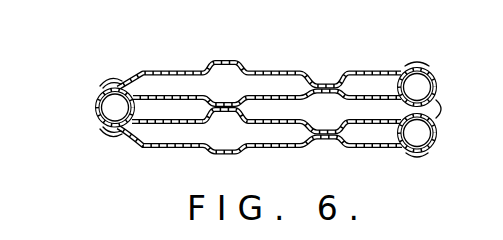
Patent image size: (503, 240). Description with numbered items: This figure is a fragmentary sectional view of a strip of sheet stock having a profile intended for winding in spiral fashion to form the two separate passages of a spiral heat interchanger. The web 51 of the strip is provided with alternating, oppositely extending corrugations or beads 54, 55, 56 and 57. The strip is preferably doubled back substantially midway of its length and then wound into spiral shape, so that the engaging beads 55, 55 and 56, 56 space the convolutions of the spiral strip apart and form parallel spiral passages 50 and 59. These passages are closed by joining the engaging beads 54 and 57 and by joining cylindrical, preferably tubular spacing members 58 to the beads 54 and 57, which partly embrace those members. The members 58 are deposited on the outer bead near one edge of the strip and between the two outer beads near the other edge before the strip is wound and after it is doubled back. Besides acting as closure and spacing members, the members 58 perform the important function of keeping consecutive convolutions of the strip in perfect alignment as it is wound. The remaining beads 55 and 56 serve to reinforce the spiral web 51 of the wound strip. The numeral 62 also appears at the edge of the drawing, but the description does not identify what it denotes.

The spiral passage 50 is at (279, 100).
The web 51 is at (270, 71).
The bead 54 is at (112, 79).
The bead 55 is at (211, 63).
The bead 56 is at (331, 80).
The bead 57 is at (413, 63).
The spacing member 58 is at (99, 116).
The spiral passage 59 is at (320, 107).
The fin 62 is at (490, 41).